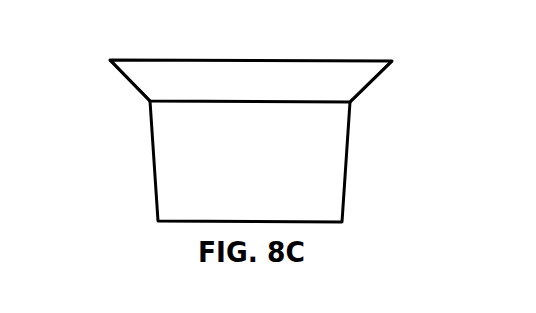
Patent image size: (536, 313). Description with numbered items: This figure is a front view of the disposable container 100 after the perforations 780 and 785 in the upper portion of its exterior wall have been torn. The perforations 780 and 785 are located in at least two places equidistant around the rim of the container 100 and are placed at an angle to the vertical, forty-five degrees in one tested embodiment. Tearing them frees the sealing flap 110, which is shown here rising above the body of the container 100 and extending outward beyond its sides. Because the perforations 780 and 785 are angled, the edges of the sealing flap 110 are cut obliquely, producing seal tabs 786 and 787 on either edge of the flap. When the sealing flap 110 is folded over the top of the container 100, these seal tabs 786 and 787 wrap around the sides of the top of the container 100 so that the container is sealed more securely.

The disposable container 100 is at (157, 182).
The sealing flap 110 is at (287, 85).
The perforation 780 is at (142, 87).
The perforation 785 is at (368, 92).
The seal tab 786 is at (145, 73).
The seal tab 787 is at (348, 85).